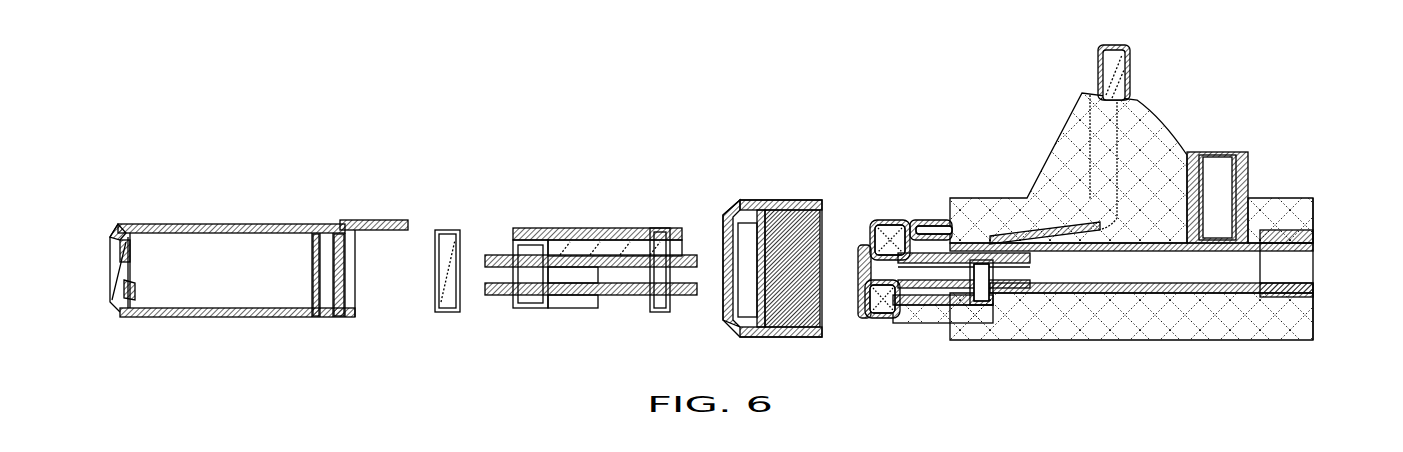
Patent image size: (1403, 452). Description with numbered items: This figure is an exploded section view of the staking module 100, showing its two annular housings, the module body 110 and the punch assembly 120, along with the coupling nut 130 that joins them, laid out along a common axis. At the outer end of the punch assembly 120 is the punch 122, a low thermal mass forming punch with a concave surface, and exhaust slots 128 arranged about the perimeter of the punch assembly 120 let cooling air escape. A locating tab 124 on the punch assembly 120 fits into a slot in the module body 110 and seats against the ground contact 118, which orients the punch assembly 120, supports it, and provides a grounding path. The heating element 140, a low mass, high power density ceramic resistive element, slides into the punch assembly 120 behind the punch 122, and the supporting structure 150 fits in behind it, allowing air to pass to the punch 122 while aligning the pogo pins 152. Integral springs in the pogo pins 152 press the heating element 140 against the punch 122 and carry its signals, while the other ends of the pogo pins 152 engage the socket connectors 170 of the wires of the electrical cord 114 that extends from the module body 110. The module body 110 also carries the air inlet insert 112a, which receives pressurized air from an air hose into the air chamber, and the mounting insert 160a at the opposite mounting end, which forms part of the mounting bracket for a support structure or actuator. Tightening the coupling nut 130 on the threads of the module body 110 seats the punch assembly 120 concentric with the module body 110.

The staking module 100 is at (424, 72).
The module body 110 is at (1170, 370).
The air inlet insert 112a is at (1233, 173).
The electrical cord 114 is at (1122, 72).
The ground contact 118 is at (928, 223).
The punch assembly 120 is at (241, 189).
The punch 122 is at (115, 268).
The locating tab 124 is at (368, 222).
The exhaust slots 128 is at (130, 298).
The coupling nut 130 is at (768, 205).
The heating element 140 is at (449, 258).
The supporting structure 150 is at (646, 240).
The pogo pins 152 is at (583, 321).
The mounting insert 160a is at (1300, 237).
The socket connectors 170 is at (869, 258).